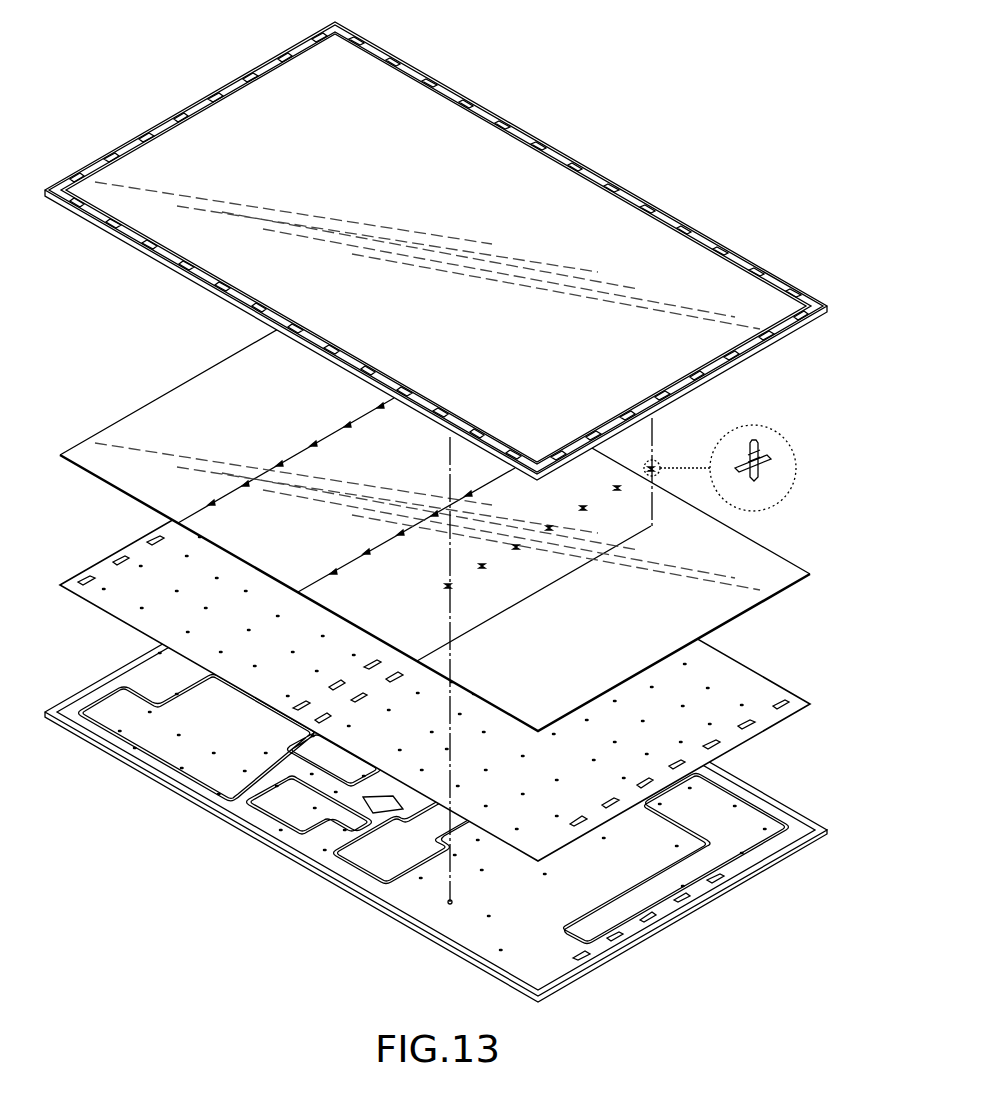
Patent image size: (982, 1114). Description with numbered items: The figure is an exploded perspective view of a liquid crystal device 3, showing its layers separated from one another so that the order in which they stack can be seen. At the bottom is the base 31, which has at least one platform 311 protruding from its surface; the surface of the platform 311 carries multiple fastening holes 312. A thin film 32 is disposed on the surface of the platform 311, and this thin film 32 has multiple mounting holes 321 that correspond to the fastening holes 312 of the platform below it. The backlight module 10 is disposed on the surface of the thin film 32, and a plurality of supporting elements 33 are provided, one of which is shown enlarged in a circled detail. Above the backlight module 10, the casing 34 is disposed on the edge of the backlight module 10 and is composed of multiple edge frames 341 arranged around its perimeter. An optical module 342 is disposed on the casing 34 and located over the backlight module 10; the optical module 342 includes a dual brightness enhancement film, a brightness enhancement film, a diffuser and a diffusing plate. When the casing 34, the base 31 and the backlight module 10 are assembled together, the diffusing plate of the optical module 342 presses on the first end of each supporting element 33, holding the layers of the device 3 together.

The display device 3 is at (660, 41).
The backlight module 10 is at (170, 385).
The base 31 is at (436, 773).
The platform 311 is at (708, 815).
The fastening holes 312 is at (450, 902).
The thin film 32 is at (435, 655).
The mounting holes 321 is at (452, 770).
The supporting element 33 is at (658, 462).
The casing 34 is at (436, 251).
The edge frames 341 is at (445, 80).
The optical module 342 is at (212, 130).